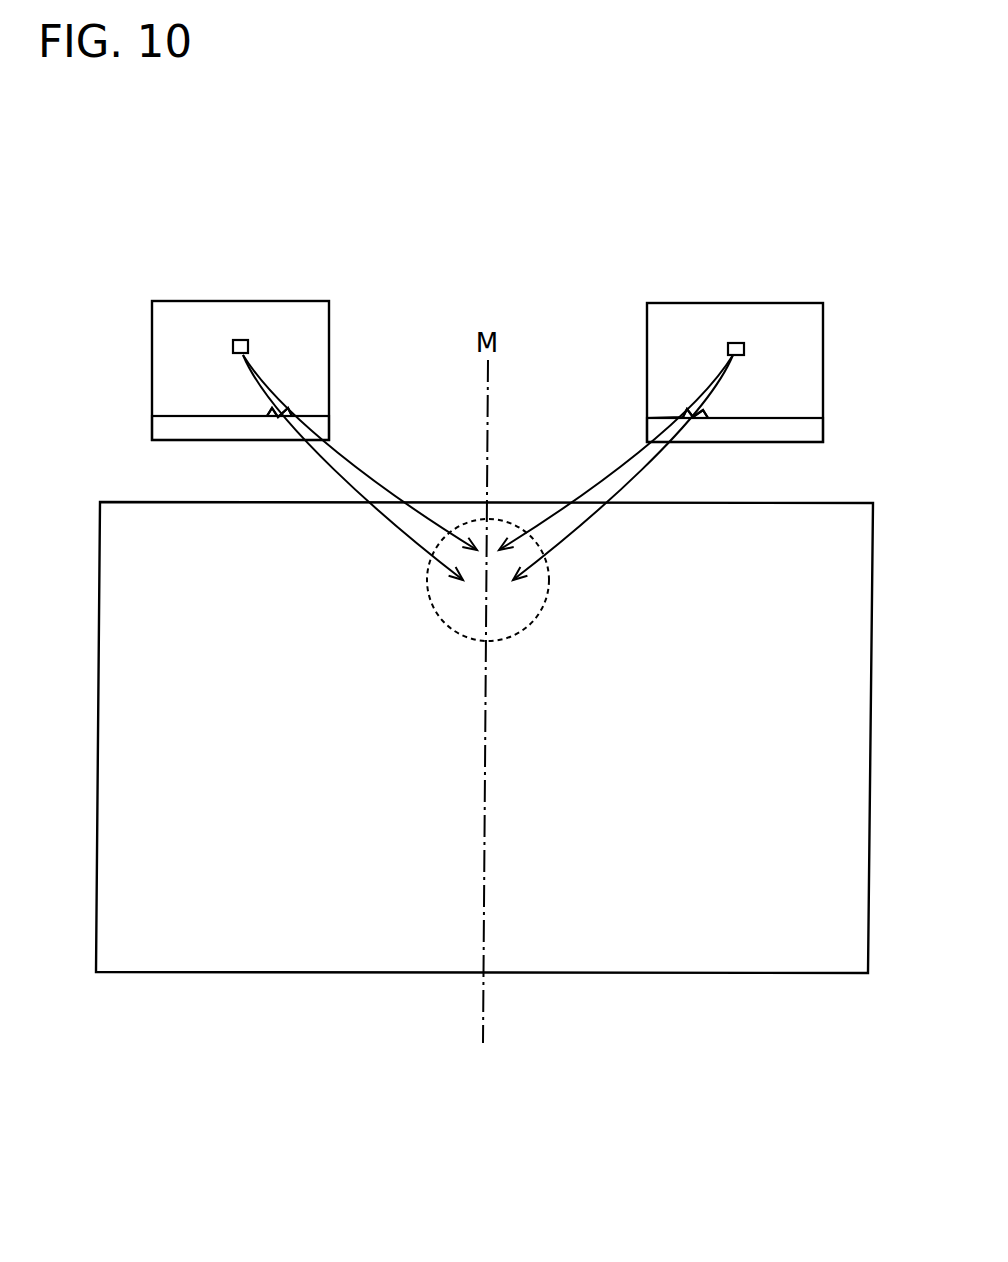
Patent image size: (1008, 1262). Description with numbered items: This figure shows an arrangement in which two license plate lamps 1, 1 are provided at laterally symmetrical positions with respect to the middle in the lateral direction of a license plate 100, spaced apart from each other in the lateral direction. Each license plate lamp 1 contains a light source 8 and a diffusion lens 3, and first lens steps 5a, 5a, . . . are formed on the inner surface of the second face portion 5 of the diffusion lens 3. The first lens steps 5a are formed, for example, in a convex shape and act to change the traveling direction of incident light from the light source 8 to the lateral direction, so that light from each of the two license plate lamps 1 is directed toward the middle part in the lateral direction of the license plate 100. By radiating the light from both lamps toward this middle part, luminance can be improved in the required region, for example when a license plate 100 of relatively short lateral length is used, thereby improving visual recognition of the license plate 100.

The license plate lamp 1 is at (230, 301).
The diffusion lens 3 is at (160, 428).
The second face portion 5 is at (180, 423).
The first lens steps 5a is at (290, 411).
The light source 8 is at (247, 340).
The license plate 100 is at (670, 953).